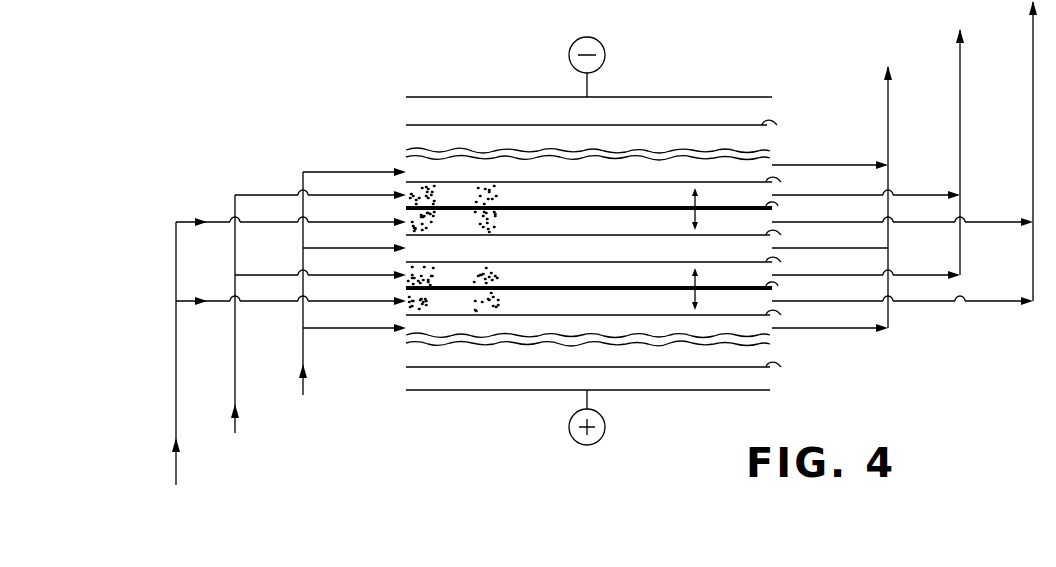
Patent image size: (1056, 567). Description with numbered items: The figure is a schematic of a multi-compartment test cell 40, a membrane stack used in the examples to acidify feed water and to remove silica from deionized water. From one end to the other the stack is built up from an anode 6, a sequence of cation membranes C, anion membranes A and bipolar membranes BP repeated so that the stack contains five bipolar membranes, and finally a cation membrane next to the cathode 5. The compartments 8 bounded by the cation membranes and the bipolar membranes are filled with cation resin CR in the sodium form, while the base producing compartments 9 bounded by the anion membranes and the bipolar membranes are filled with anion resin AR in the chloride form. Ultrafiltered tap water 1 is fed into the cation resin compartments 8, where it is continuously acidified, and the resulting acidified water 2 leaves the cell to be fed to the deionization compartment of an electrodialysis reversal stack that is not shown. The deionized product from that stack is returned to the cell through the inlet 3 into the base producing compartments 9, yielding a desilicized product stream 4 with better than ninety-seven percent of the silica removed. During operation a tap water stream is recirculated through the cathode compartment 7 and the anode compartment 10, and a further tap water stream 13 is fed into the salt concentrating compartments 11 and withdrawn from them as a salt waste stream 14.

The tap water 1 is at (233, 377).
The acidified water 2 is at (962, 118).
The inlet 3 is at (175, 403).
The desilicized product stream 4 is at (1035, 93).
The cathode 5 is at (712, 96).
The anode 6 is at (691, 390).
The cathode compartment 7 is at (586, 112).
The compartments filled with cation resin 8 is at (589, 235).
The base producing compartments 9 is at (478, 262).
The anode compartment 10 is at (588, 379).
The salt concentrating compartments 11 is at (588, 247).
The tap water stream 13 is at (298, 337).
The salt waste stream 14 is at (890, 145).
The multi-compartment test cell 40 is at (378, 72).